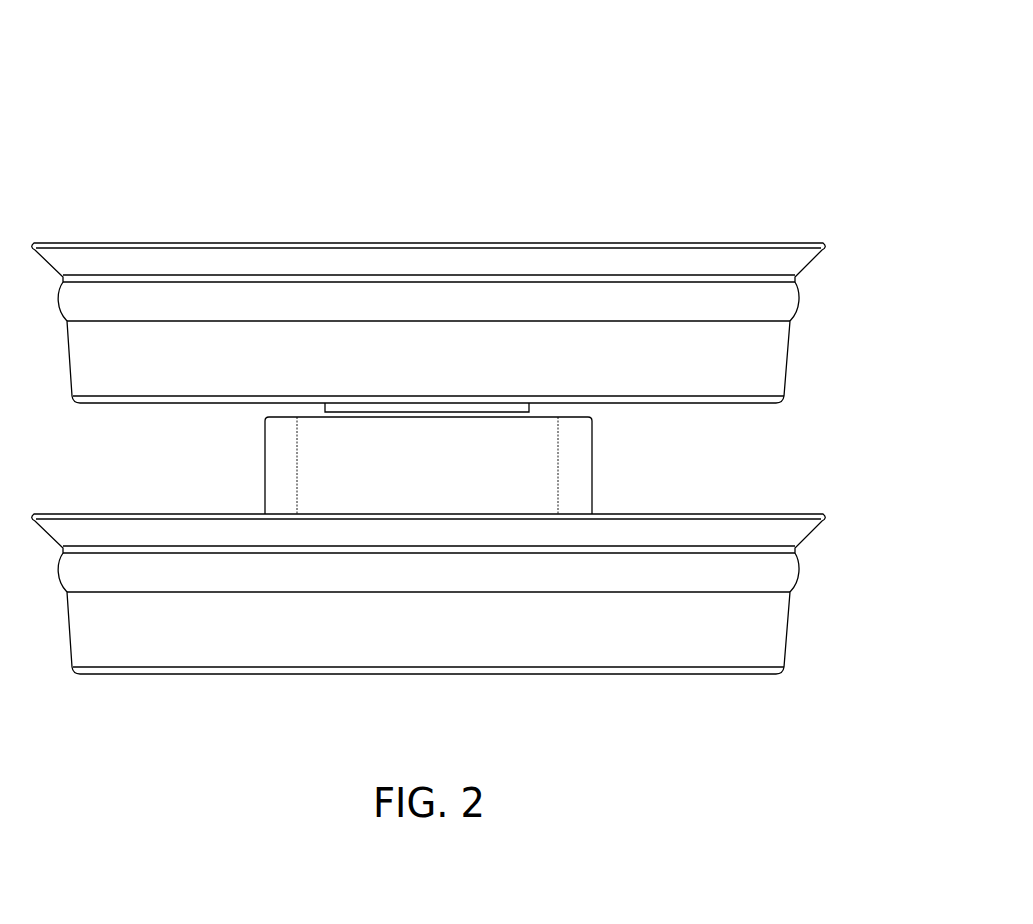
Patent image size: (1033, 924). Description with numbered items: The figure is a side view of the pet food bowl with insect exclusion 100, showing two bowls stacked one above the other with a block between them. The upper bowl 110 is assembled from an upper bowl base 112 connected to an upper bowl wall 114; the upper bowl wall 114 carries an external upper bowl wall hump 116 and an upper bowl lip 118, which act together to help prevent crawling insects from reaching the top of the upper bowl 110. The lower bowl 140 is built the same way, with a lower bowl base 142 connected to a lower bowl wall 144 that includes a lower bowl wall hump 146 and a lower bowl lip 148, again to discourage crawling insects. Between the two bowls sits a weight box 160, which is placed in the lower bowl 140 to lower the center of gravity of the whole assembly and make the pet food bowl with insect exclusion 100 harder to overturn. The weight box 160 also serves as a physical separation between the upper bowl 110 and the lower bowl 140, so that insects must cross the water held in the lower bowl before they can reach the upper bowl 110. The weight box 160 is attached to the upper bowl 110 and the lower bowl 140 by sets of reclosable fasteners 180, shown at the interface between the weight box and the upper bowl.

The pet food bowl with insect exclusion 100 is at (594, 69).
The upper bowl 110 is at (797, 316).
The upper bowl base 112 is at (687, 405).
The upper bowl wall 114 is at (757, 387).
The upper bowl wall hump 116 is at (778, 302).
The upper bowl lip 118 is at (783, 268).
The lower bowl 140 is at (788, 666).
The lower bowl base 142 is at (652, 677).
The lower bowl wall 144 is at (748, 630).
The lower bowl wall hump 146 is at (775, 577).
The lower bowl lip 148 is at (783, 525).
The weight box 160 is at (457, 484).
The reclosable fasteners 180 is at (275, 405).